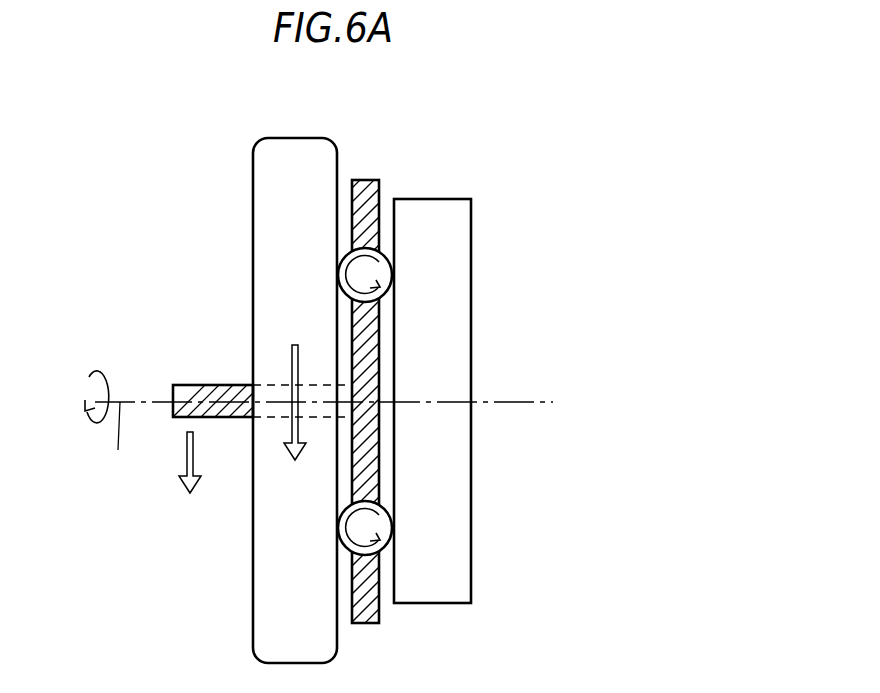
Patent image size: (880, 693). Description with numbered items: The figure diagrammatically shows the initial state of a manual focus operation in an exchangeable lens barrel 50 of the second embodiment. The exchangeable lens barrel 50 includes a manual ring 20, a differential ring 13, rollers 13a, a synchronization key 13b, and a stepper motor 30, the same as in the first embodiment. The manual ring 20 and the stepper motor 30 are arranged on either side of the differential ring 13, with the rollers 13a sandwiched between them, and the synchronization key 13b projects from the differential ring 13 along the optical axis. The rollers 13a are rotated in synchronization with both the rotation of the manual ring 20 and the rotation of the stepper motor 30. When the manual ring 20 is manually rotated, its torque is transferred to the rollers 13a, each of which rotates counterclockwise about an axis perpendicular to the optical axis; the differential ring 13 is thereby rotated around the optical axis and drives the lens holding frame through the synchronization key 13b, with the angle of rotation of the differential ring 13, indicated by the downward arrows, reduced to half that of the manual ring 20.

The exchangeable lens barrel 50 is at (142, 127).
The manual ring 20 is at (278, 205).
The differential ring 13 is at (368, 192).
The rollers 13a is at (337, 531).
The synchronization key 13b is at (195, 392).
The stepper motor 30 is at (440, 297).